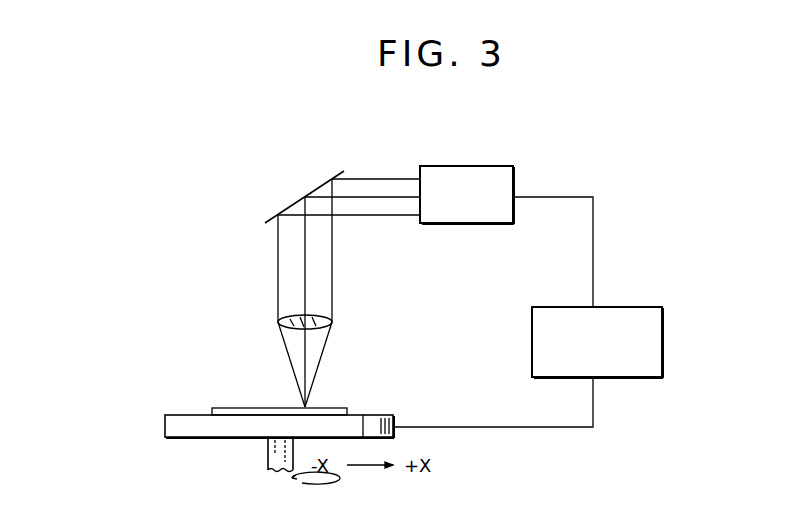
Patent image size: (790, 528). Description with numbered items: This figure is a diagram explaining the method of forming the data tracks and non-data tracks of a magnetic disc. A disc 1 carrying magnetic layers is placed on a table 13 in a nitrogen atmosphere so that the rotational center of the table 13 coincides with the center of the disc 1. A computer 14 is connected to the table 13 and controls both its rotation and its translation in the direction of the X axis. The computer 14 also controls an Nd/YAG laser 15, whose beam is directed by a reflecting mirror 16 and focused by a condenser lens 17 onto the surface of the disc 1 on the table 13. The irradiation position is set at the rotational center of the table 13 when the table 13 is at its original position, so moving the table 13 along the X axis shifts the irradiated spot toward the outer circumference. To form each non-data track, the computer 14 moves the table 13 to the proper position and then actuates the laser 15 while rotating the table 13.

The workpiece / sample 1 is at (226, 408).
The table 13 is at (165, 427).
The computer 14 is at (628, 307).
The Nd/YAG laser 15 is at (481, 166).
The reflecting mirror 16 is at (305, 197).
The condenser lens 17 is at (328, 320).